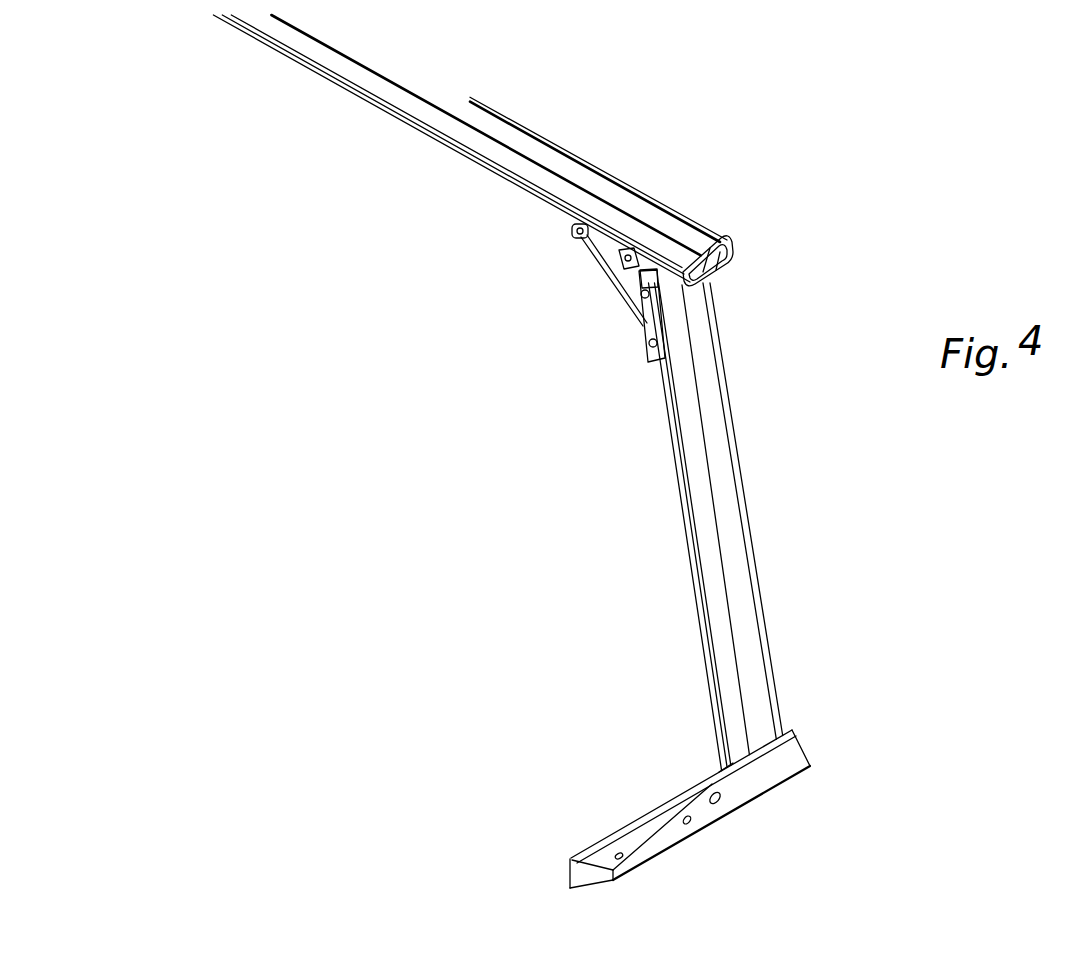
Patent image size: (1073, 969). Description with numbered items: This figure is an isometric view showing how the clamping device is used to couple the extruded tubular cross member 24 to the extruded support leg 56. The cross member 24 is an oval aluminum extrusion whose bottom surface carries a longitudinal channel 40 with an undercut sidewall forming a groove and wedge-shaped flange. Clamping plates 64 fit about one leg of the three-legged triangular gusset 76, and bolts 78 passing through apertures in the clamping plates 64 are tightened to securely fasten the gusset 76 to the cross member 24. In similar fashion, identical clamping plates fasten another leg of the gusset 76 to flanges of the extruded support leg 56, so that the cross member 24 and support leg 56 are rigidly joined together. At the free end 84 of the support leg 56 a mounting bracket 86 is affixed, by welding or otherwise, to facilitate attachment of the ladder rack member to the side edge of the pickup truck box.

The extruded tubular cross member 24 is at (497, 133).
The bolt 78 is at (577, 238).
The clamping plate 64 is at (603, 243).
The triangular gusset 76 is at (606, 299).
The channel 40 is at (648, 322).
The support leg 56 is at (743, 499).
The free end of the support leg member 84 is at (722, 766).
The mounting bracket 86 is at (757, 773).